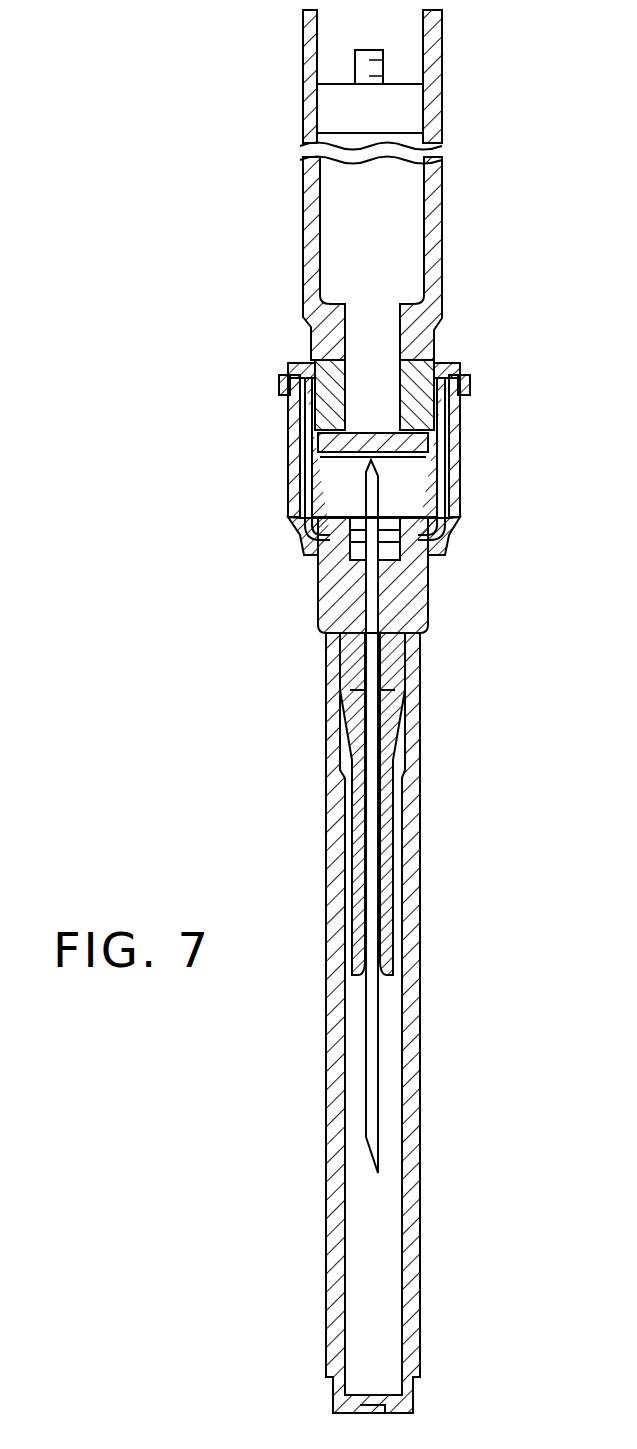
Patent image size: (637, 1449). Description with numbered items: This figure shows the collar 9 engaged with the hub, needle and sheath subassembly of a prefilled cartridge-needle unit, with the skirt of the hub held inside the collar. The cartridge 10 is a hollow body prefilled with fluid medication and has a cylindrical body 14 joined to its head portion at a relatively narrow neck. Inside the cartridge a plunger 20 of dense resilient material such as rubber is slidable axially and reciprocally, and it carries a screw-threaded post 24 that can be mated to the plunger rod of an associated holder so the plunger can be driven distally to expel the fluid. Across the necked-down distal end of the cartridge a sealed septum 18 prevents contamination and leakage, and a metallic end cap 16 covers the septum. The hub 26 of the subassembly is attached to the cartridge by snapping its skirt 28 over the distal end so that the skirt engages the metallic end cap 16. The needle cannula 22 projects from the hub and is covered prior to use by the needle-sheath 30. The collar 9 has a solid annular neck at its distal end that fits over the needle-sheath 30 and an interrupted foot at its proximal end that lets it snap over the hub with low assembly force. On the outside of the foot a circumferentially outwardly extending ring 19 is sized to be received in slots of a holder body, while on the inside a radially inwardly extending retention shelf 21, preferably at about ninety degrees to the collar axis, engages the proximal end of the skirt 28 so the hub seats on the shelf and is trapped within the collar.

The cartridge 10 is at (198, 185).
The cylindrical body 14 is at (442, 193).
The plunger 20 is at (405, 107).
The screw-threaded post 24 is at (355, 70).
The skirt 28 is at (448, 498).
The collar 9 is at (288, 505).
The ring 19 is at (290, 390).
The retention shelf 21 is at (292, 402).
The metallic end cap 16 is at (437, 468).
The septum 18 is at (300, 468).
The hub 26 is at (428, 595).
The needle-sheath 30 is at (410, 922).
The needle cannula 22 is at (378, 1097).